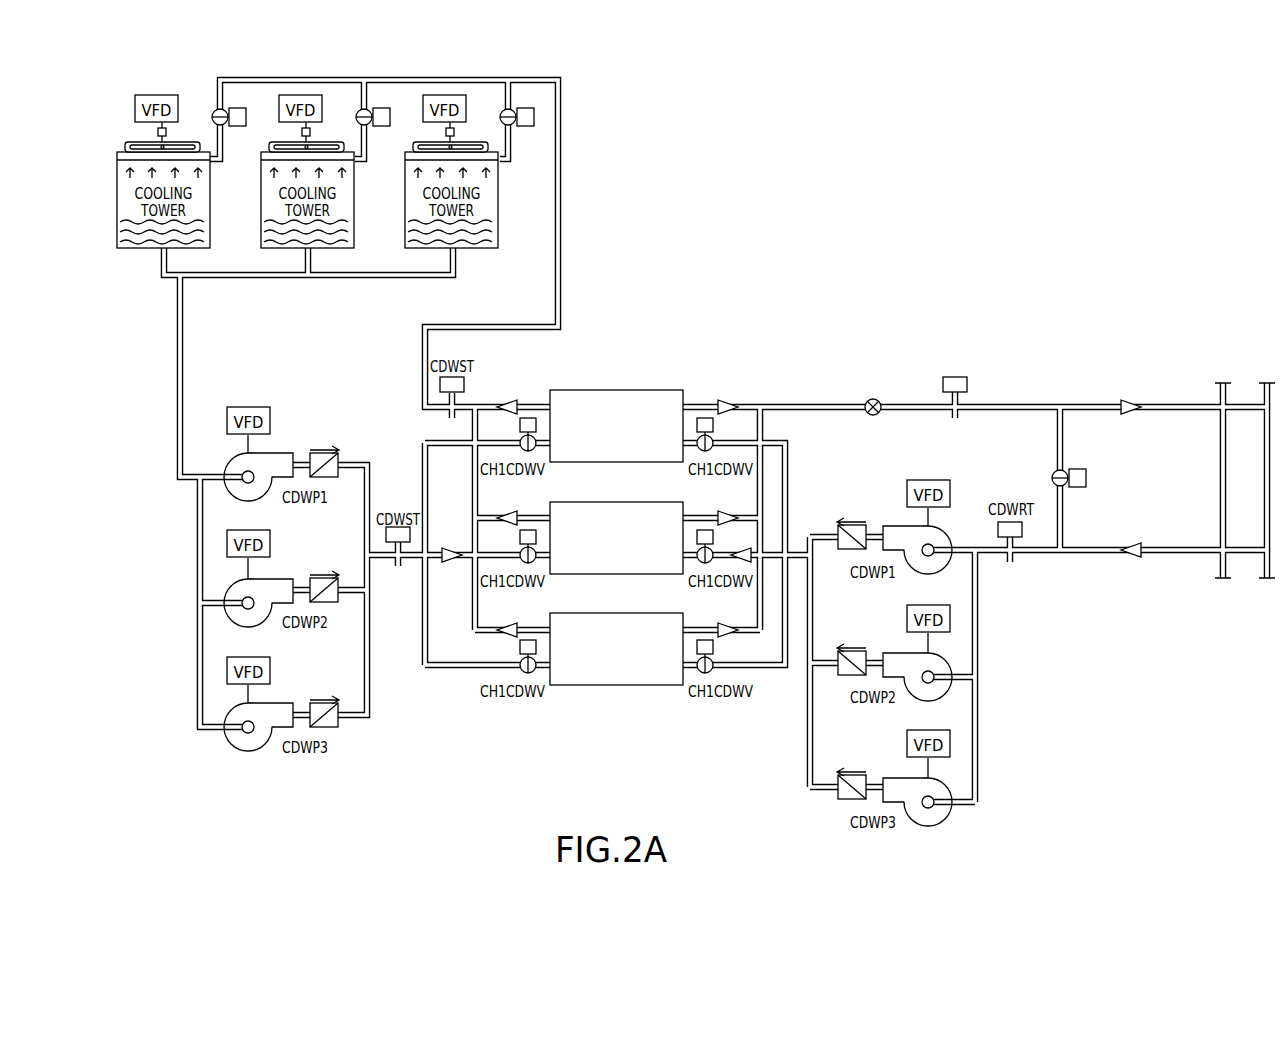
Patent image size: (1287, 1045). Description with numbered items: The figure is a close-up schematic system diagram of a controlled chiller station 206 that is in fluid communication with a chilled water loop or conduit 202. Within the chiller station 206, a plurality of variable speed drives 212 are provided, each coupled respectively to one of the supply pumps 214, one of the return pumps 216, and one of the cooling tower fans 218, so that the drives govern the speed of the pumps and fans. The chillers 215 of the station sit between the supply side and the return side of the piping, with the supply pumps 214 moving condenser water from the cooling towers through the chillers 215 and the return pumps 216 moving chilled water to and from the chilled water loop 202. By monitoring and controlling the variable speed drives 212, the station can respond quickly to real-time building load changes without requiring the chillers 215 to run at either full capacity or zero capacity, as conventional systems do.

The chilled water loop or conduit 202 is at (1198, 345).
The chiller station 206 is at (868, 187).
The variable speed drive 212 is at (158, 93).
The supply pump 214 is at (230, 498).
The chiller 215 is at (640, 390).
The return pump 216 is at (945, 573).
The cooling tower fan 218 is at (185, 152).